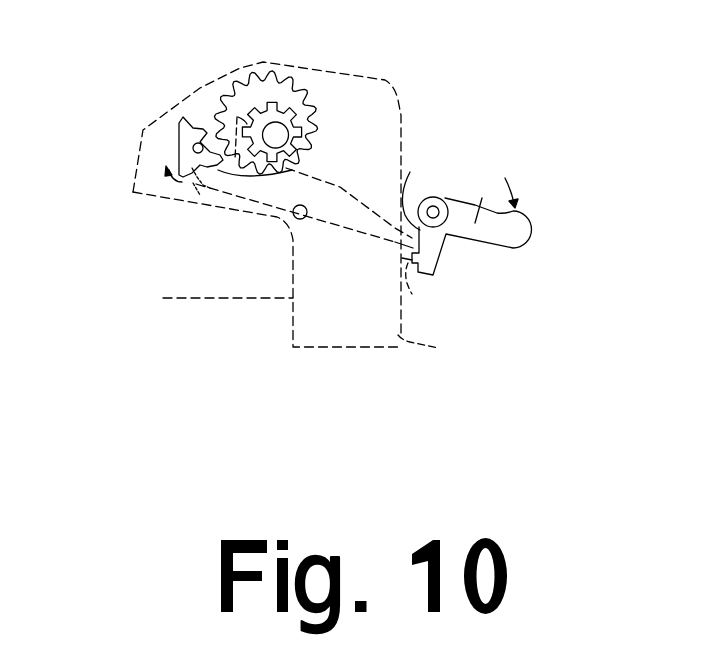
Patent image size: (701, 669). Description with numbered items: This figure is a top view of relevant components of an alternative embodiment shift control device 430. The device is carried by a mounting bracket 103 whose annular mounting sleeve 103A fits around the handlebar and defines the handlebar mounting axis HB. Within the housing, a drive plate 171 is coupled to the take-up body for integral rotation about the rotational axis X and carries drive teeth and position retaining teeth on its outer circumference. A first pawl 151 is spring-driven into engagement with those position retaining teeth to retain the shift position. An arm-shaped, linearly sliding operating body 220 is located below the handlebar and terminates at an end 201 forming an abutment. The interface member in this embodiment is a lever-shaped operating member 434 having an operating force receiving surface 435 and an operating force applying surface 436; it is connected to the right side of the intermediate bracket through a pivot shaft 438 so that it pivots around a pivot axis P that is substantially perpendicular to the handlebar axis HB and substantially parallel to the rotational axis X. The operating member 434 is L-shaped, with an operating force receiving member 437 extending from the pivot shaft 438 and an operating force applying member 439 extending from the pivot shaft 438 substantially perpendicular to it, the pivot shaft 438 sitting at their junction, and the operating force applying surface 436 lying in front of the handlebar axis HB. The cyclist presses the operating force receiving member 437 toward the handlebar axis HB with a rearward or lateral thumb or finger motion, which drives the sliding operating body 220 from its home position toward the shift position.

The mounting bracket 103 is at (210, 84).
The annular mounting sleeve 103A is at (441, 348).
The first pawl 151 is at (179, 148).
The drive plate 171 is at (308, 99).
The end 201 is at (430, 291).
The sliding operating body 220 is at (304, 188).
The shift control device 430 is at (165, 103).
The operating member 434 is at (500, 259).
The operating force receiving surface 435 is at (532, 222).
The operating force applying surface 436 is at (424, 190).
The operating force receiving member 437 is at (494, 199).
The pivot shaft 438 is at (437, 209).
The operating force applying member 439 is at (437, 266).
The rotational axis X is at (276, 135).
The pivot axis P is at (437, 207).
The handlebar mounting axis HB is at (198, 296).